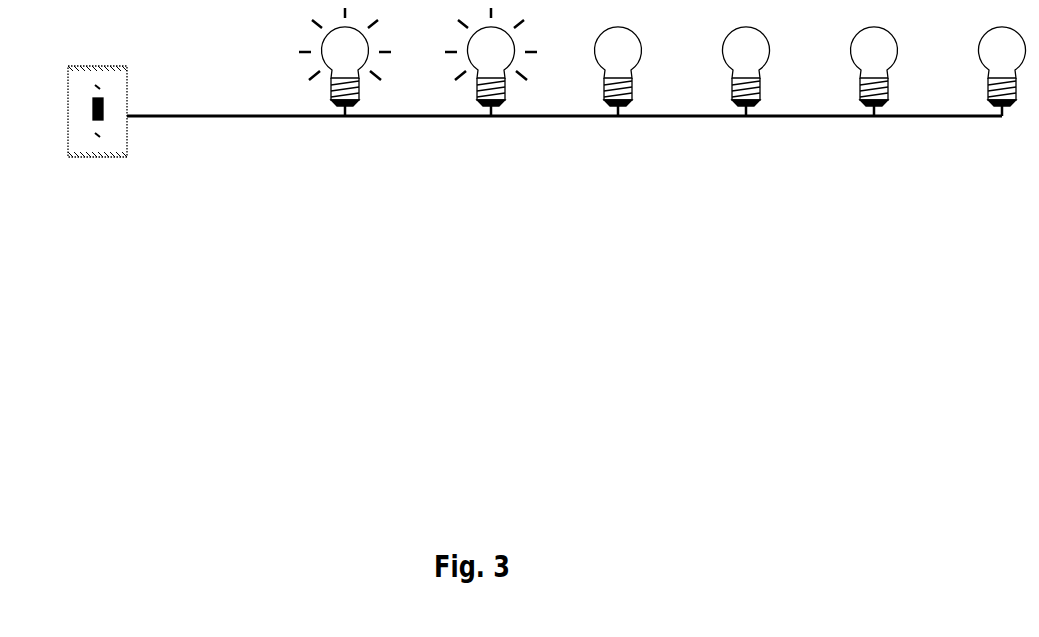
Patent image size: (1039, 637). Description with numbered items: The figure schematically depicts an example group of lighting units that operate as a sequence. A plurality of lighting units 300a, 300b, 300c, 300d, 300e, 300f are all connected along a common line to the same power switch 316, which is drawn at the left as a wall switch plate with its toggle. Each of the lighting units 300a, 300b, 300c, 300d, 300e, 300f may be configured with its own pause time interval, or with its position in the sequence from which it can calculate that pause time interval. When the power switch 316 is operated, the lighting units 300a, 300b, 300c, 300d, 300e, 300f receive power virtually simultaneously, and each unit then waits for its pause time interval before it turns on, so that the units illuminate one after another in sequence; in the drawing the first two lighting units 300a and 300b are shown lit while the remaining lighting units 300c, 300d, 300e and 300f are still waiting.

The power switch 316 is at (128, 92).
The lighting unit 300a is at (345, 78).
The lighting unit 300b is at (491, 78).
The lighting unit 300c is at (618, 87).
The lighting unit 300d is at (746, 87).
The lighting unit 300e is at (874, 87).
The lighting unit 300f is at (1002, 87).